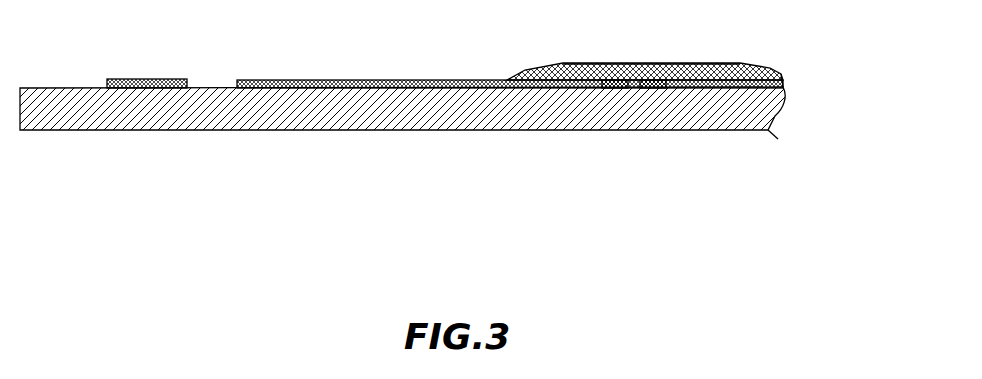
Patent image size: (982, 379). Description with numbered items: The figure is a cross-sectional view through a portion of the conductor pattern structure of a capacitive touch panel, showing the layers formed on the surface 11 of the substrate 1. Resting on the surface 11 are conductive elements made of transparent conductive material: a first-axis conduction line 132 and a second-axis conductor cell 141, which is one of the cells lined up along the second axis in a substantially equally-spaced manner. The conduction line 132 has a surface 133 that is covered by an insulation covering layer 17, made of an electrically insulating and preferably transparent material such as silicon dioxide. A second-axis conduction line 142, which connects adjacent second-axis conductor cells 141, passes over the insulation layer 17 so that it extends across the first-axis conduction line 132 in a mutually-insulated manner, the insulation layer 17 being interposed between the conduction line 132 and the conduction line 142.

The substrate 1 is at (775, 110).
The surface 11 is at (771, 75).
The insulation covering layer 17 is at (641, 72).
The first-axis conduction line 132 is at (148, 83).
The surface 133 is at (613, 87).
The second-axis conductor cell 141 is at (300, 82).
The second-axis conduction line 142 is at (620, 72).